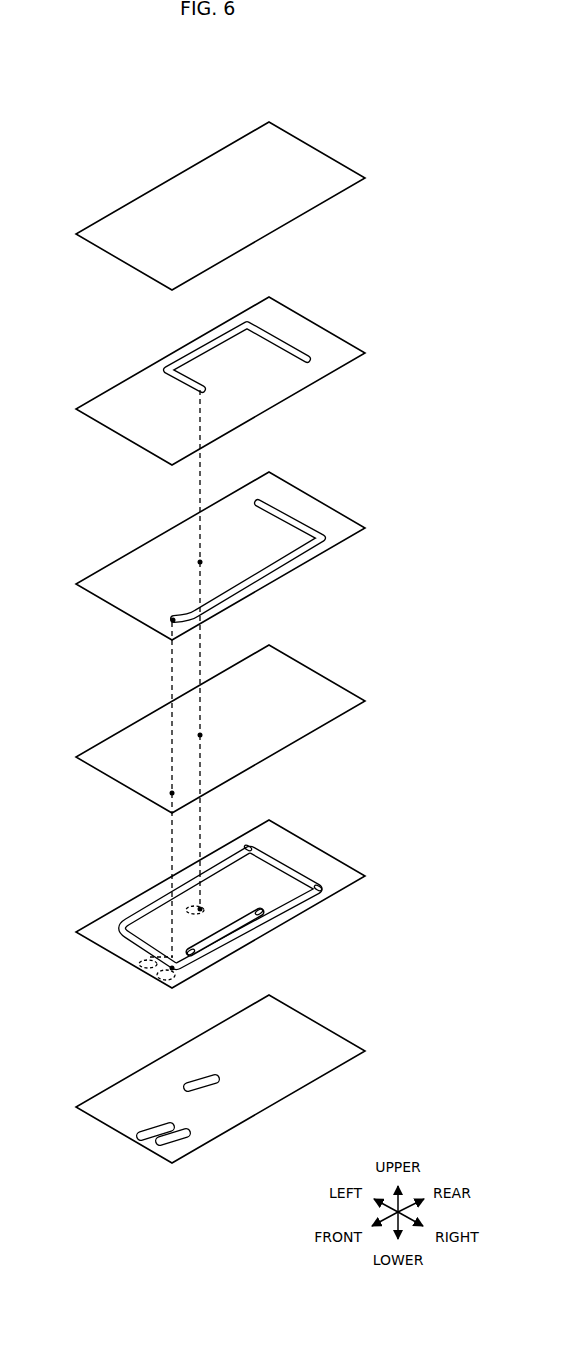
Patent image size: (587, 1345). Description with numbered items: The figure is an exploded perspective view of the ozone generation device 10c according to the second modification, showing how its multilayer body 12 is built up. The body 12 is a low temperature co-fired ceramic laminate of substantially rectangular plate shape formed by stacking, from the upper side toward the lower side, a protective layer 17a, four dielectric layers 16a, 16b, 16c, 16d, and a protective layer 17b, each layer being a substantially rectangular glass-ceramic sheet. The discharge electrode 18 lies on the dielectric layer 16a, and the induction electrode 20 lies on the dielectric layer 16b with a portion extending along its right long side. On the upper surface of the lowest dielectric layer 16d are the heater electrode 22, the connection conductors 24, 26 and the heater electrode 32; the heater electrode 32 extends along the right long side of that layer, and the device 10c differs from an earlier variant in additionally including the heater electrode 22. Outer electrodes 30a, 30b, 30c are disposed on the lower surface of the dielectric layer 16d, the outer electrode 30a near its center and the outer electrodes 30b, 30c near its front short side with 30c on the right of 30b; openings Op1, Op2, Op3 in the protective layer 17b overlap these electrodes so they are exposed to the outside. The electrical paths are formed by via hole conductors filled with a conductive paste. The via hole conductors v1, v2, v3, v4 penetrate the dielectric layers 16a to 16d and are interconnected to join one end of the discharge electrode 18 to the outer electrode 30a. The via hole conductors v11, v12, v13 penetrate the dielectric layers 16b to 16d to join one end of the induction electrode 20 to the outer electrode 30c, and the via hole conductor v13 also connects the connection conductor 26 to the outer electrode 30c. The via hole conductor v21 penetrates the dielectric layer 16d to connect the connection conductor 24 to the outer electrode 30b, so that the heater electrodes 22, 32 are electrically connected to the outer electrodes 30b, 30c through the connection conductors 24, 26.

The ozone generation device 10c is at (70, 80).
The body 12 is at (88, 154).
The protective layer 17a is at (366, 178).
The dielectric layer 16a is at (366, 353).
The discharge electrode 18 is at (274, 339).
The dielectric layer 16b is at (366, 528).
The induction electrode 20 is at (288, 512).
The dielectric layer 16c is at (366, 701).
The dielectric layer 16d is at (366, 876).
The heater electrode 22 is at (295, 870).
The connection conductor 24 is at (133, 905).
The connection conductor 26 is at (304, 904).
The heater electrode 32 is at (228, 933).
The outer electrode 30a is at (213, 911).
The outer electrode 30b is at (130, 968).
The outer electrode 30c is at (158, 981).
The protective layer 17b is at (366, 1051).
The opening Op1 is at (217, 1081).
The opening Op2 is at (187, 1134).
The opening Op3 is at (162, 1122).
The via hole conductor v1 is at (200, 476).
The via hole conductor v2 is at (200, 660).
The via hole conductor v3 is at (200, 797).
The via hole conductor v4 is at (200, 908).
The via hole conductor v11 is at (172, 678).
The via hole conductor v12 is at (171, 838).
The via hole conductor v13 is at (173, 973).
The via hole conductor v21 is at (160, 953).